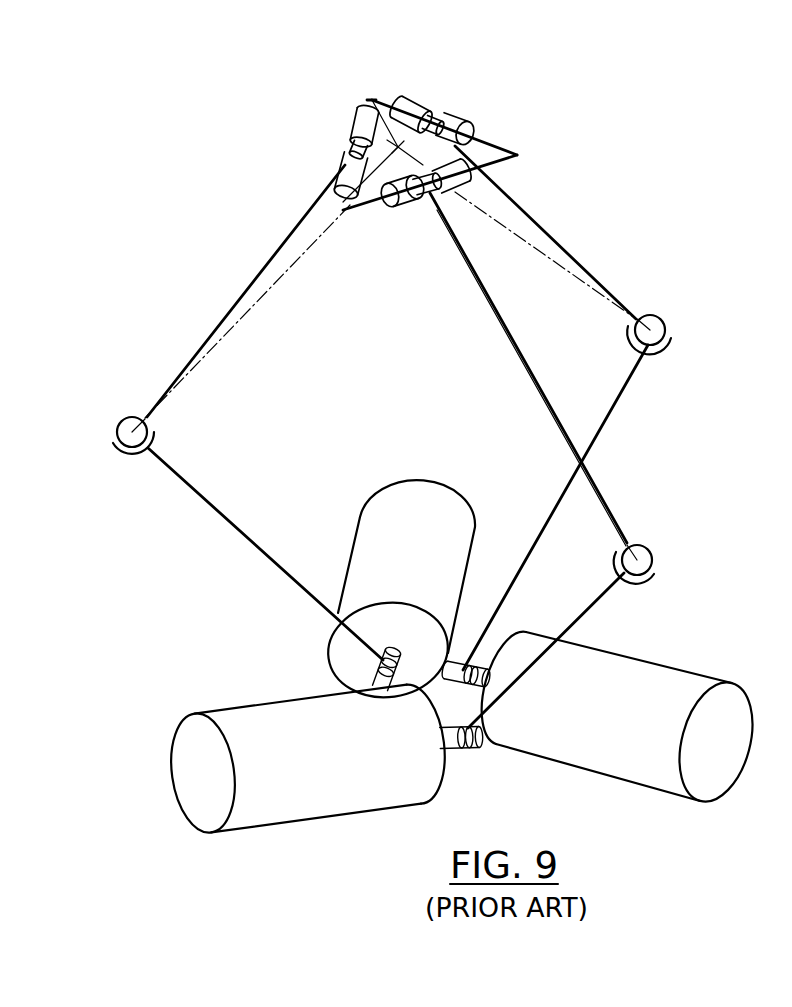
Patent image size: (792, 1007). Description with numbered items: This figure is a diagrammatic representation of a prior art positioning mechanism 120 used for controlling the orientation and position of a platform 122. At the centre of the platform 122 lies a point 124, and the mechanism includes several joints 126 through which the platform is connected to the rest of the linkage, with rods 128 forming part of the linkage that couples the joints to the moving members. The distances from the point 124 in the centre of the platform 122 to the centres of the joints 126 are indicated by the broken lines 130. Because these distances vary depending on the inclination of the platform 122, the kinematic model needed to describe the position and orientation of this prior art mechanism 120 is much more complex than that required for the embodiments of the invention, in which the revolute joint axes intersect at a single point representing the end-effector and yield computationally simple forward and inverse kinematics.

The positioning mechanism 120 is at (614, 148).
The platform 122 is at (433, 143).
The point 124 is at (372, 100).
The joints 126 is at (292, 262).
The connecting rod 128 is at (483, 302).
The broken lines 130 is at (564, 271).